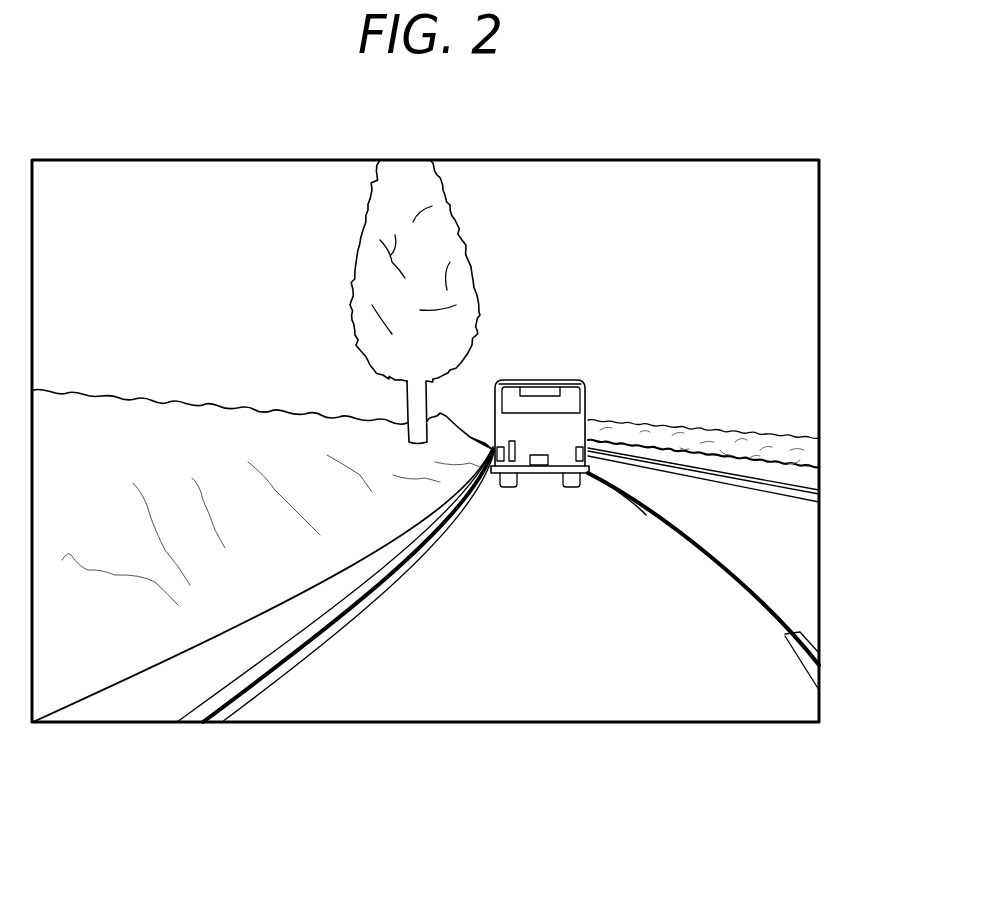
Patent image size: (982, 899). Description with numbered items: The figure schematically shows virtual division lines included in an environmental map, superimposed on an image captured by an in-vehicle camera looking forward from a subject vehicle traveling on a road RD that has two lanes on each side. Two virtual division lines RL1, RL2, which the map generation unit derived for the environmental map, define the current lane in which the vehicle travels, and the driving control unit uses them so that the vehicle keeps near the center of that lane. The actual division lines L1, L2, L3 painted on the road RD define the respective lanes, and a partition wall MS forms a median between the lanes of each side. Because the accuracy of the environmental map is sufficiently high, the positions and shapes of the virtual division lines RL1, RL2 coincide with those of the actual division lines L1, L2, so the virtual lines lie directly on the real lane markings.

The road RD is at (553, 692).
The division line L1 is at (217, 692).
The virtual division line RL1 is at (251, 688).
The virtual division line RL2 is at (750, 585).
The division line L2 is at (803, 658).
The partition wall MS is at (808, 487).
The division line L3 is at (772, 502).